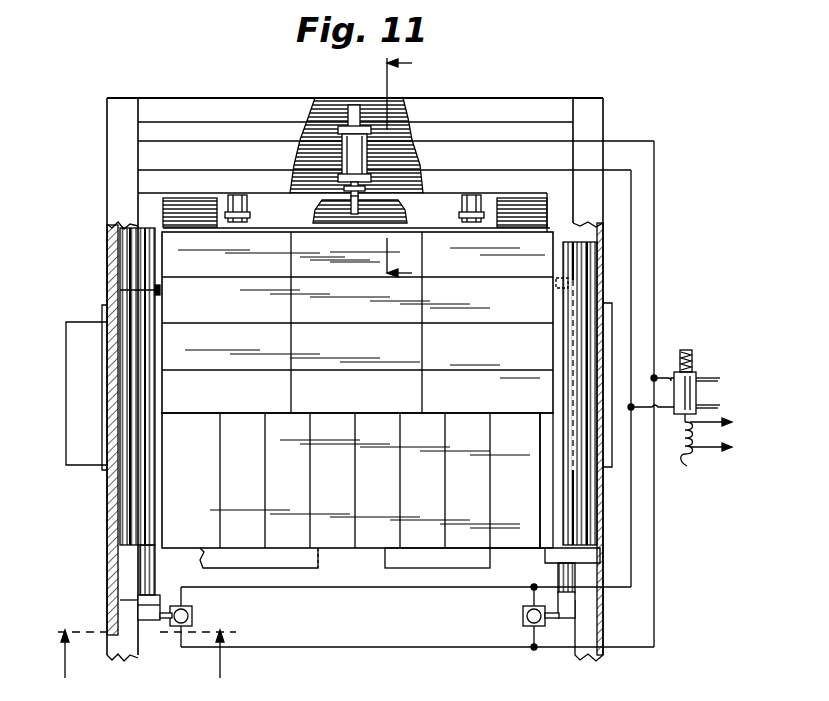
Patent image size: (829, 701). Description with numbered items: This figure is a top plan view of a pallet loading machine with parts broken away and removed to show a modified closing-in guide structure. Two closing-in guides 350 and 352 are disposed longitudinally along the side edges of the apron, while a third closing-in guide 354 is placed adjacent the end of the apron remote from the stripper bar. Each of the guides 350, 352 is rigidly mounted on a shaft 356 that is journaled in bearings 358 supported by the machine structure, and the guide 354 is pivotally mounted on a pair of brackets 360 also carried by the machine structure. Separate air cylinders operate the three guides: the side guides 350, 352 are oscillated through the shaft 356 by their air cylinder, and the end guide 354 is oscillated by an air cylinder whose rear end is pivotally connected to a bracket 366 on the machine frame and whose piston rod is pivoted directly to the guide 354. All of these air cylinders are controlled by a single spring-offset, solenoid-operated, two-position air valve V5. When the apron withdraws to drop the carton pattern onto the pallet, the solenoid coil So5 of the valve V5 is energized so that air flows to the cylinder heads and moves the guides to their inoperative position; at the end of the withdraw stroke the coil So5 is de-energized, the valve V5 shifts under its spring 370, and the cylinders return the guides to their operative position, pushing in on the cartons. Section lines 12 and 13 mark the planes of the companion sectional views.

The spring 370 is at (688, 350).
The two position air valve V5 is at (698, 392).
The solenoid coil So5 is at (687, 466).
The bracket 366 is at (356, 133).
The closing-in guide 354 is at (320, 186).
The brackets 360 is at (230, 196).
The bearings 358 is at (160, 290).
The closing-in guide 350 is at (136, 500).
The shaft 356 is at (155, 575).
The closing-in guide 352 is at (556, 290).
The section line 13 is at (405, 167).
The section line 12 is at (152, 654).